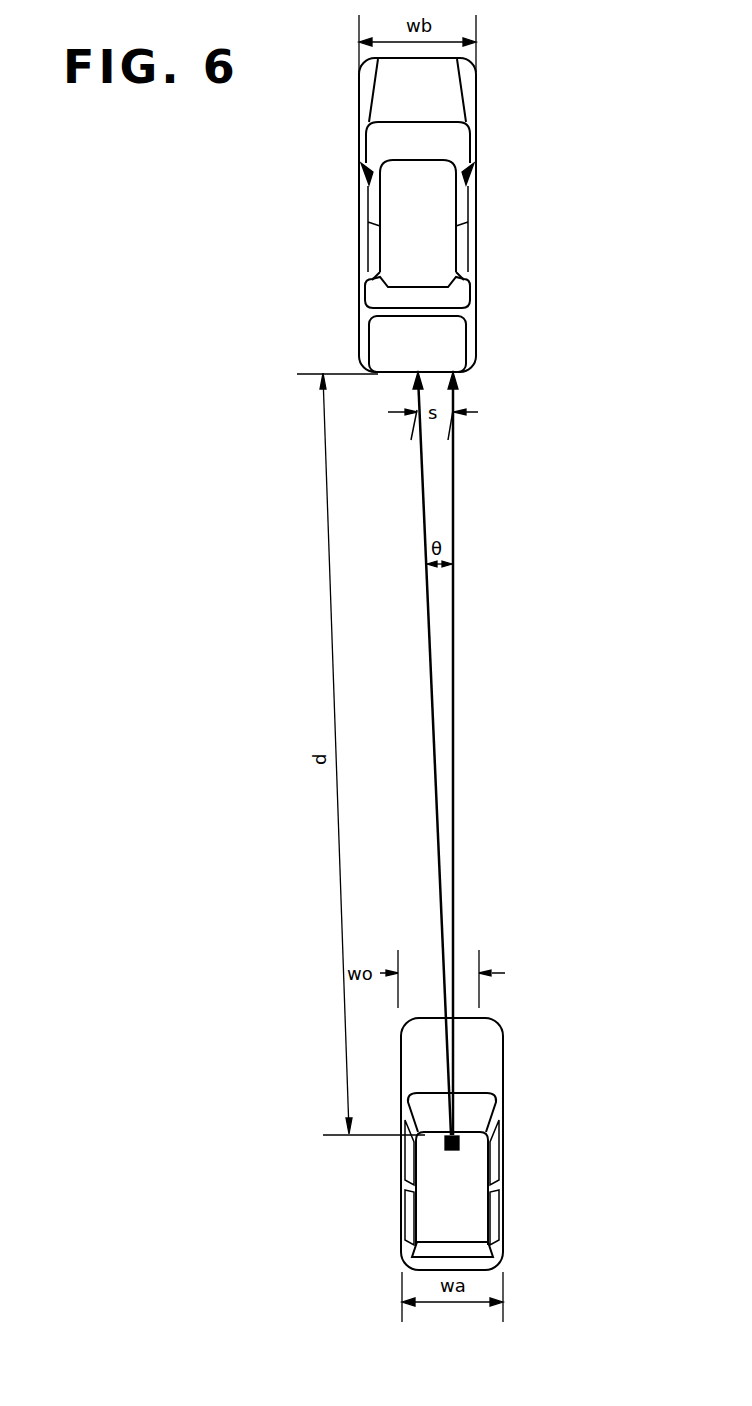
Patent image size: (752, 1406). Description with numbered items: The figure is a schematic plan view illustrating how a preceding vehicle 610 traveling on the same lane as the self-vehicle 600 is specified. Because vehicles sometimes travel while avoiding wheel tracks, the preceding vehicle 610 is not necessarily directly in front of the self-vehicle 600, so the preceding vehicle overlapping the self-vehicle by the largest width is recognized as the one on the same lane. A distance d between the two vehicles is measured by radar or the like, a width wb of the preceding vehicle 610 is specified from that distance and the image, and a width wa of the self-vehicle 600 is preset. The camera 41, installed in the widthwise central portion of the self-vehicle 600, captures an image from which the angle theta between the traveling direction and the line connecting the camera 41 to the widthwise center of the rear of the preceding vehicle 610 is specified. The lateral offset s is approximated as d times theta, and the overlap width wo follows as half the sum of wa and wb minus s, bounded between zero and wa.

The preceding vehicle 610 is at (476, 127).
The host vehicle 600 is at (503, 1082).
The camera 41 is at (460, 1143).